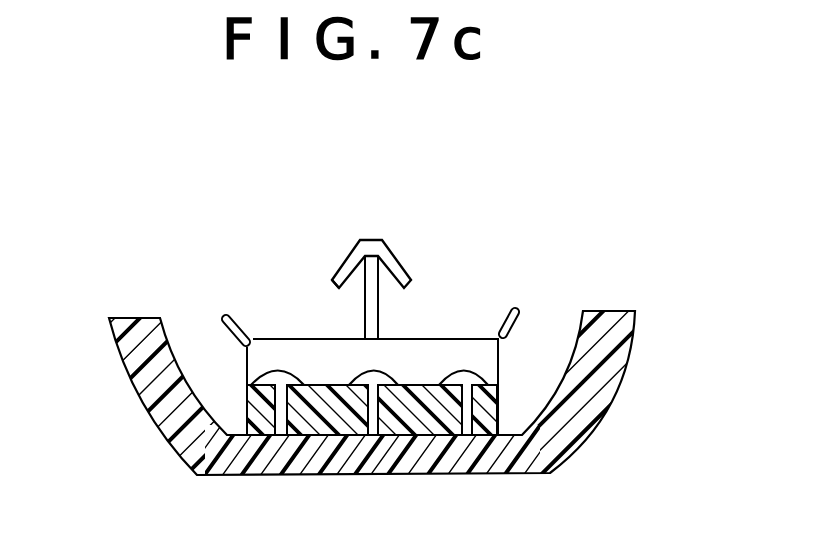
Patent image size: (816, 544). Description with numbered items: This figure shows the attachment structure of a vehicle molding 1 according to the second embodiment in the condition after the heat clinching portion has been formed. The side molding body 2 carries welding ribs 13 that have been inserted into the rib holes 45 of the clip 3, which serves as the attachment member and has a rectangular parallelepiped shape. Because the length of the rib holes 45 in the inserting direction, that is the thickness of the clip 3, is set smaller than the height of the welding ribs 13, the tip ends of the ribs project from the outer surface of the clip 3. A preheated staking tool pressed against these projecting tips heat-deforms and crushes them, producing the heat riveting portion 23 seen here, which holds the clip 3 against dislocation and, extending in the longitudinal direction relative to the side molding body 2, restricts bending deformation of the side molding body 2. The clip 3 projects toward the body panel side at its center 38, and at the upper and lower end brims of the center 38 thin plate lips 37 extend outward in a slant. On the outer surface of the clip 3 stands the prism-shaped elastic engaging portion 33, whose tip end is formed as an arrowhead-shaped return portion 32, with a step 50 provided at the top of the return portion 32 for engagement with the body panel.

The vehicle molding 1 is at (478, 150).
The side molding body 2 is at (113, 300).
The clip 3 is at (265, 290).
The welding ribs 13 is at (262, 402).
The heat riveting portion 23 is at (273, 380).
The return portion 32 is at (337, 277).
The elastic engaging portion 33 is at (380, 317).
The thin plate lip 37 is at (505, 335).
The center 38 is at (402, 355).
The rib holes 45 is at (272, 428).
The step 50 is at (333, 283).